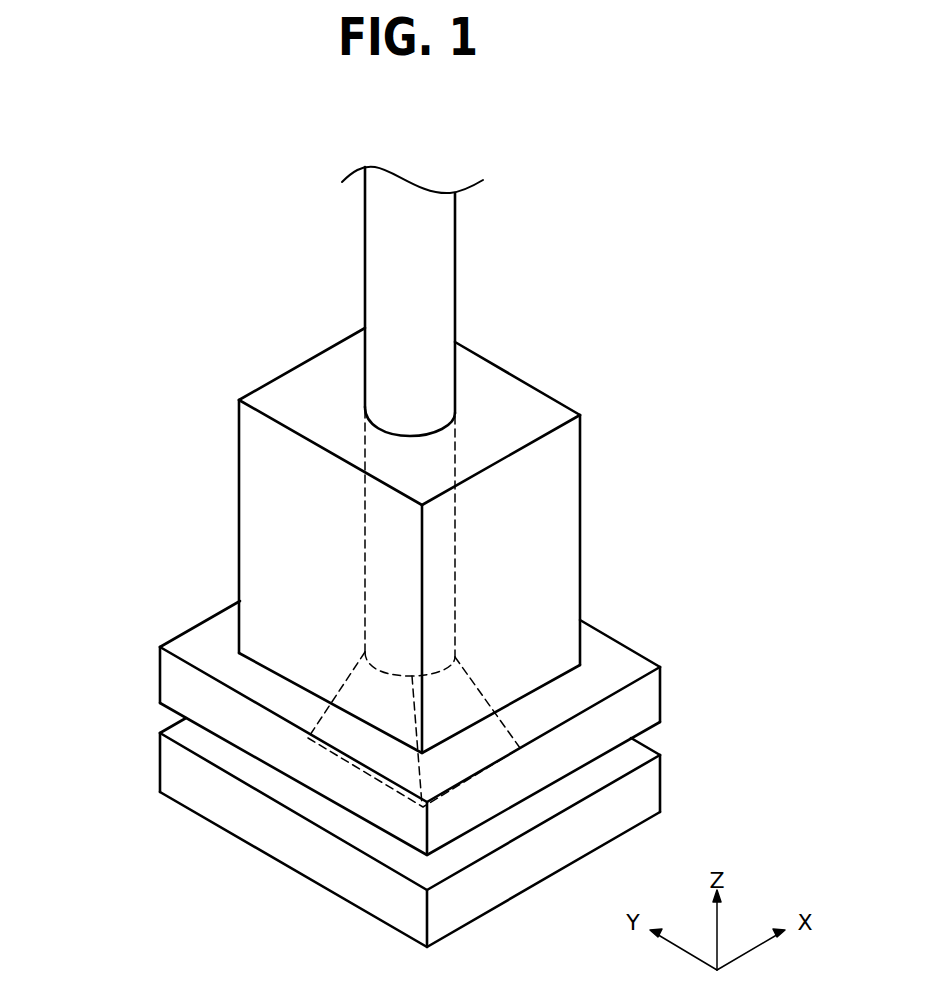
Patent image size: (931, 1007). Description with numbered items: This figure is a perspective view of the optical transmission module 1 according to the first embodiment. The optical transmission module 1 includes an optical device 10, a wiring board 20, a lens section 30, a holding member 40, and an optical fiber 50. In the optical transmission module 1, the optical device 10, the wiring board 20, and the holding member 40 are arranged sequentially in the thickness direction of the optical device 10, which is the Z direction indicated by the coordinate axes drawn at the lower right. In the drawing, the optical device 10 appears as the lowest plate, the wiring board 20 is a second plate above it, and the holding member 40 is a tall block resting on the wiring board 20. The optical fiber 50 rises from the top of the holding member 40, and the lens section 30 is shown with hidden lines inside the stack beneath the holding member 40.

The optical transmission module 1 is at (601, 290).
The optical device 10 is at (160, 768).
The wiring board 20 is at (160, 677).
The lens section 30 is at (343, 683).
The holding member 40 is at (240, 445).
The optical fiber 50 is at (365, 275).